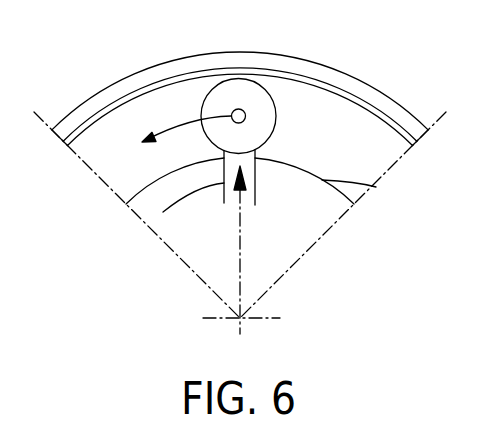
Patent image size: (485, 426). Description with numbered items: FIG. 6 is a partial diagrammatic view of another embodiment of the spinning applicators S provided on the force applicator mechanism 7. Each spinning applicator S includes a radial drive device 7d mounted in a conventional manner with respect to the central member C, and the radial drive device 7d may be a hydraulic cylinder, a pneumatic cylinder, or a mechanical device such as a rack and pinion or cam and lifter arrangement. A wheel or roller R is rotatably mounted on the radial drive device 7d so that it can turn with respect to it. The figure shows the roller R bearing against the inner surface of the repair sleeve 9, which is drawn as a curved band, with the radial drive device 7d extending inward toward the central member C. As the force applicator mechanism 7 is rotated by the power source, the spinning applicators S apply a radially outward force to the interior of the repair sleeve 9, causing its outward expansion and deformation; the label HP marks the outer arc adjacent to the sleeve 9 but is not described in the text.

The housing plate HP is at (360, 87).
The repair sleeve 9 is at (295, 78).
The wheel or roller R is at (235, 93).
The spinning applicator S is at (179, 107).
The force applicator mechanism 7 is at (264, 226).
The radial drive device 7d is at (163, 212).
The central member C is at (376, 187).